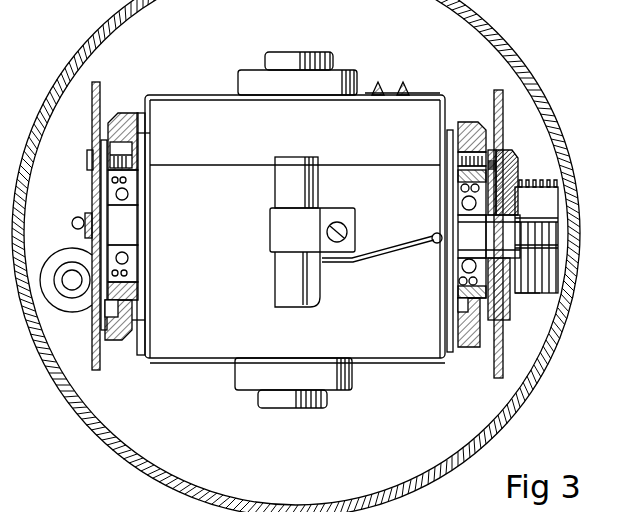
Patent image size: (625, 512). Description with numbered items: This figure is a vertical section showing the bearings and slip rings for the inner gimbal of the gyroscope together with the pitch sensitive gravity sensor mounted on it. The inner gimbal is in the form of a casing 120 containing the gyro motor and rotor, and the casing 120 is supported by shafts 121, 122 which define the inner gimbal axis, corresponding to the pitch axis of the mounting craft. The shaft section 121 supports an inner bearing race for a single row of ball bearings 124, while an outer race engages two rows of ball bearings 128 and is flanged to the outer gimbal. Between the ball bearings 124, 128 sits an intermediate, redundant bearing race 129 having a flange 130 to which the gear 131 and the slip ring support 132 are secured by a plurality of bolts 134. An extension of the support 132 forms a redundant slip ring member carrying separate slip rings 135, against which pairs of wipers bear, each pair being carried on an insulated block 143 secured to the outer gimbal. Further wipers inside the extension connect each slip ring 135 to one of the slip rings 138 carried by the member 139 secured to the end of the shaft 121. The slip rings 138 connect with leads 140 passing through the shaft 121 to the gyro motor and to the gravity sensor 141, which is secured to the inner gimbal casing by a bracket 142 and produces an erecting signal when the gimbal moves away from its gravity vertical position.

The casing 120 is at (186, 345).
The shaft section 121 is at (489, 236).
The shaft 122 is at (91, 226).
The ball bearings 124 is at (452, 259).
The ball bearings 128 is at (456, 280).
The intermediate redundant bearing race 129 is at (458, 197).
The flange 130 is at (492, 300).
The gear 131 is at (497, 110).
The slip ring support 132 is at (500, 150).
The bolts 134 is at (514, 160).
The slip rings 135 is at (543, 180).
The slip rings 138 is at (538, 240).
The member 139 is at (563, 232).
The leads 140 is at (388, 258).
The gravity sensor 141 is at (289, 294).
The bracket 142 is at (272, 248).
The insulated block 143 is at (420, 93).